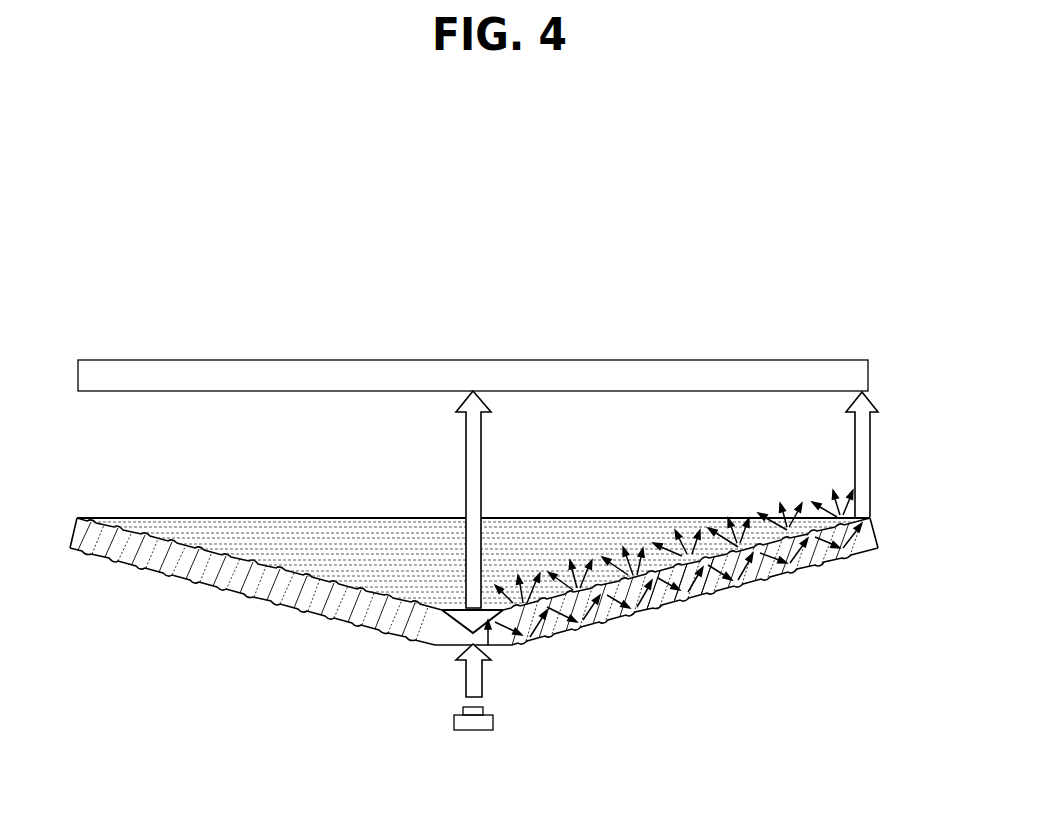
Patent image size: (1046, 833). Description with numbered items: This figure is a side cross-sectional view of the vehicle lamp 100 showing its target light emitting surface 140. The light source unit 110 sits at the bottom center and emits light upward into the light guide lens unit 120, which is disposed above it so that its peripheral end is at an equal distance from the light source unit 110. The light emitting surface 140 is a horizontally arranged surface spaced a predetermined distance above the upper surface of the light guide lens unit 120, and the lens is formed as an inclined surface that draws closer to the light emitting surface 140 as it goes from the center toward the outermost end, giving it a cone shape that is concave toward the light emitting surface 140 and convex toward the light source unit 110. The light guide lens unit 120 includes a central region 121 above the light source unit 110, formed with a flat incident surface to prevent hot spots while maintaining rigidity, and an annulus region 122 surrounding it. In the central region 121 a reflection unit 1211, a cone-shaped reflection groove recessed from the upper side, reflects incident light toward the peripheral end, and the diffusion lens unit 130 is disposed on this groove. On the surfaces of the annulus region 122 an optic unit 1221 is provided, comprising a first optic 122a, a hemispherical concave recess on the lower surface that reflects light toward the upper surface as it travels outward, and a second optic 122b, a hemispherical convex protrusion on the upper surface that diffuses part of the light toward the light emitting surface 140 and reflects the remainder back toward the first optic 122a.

The vehicle lamp 100 is at (107, 298).
The light source unit 110 is at (471, 731).
The light guide lens unit 120 is at (645, 479).
The central region 121 is at (505, 652).
The reflection unit 1211 is at (465, 628).
The annulus region 122 is at (259, 597).
The first optic 122a is at (672, 603).
The second optic 122b is at (709, 561).
The optic unit 1221 is at (753, 658).
The diffusion lens unit 130 is at (445, 612).
The target light emitting surface 140 is at (870, 377).